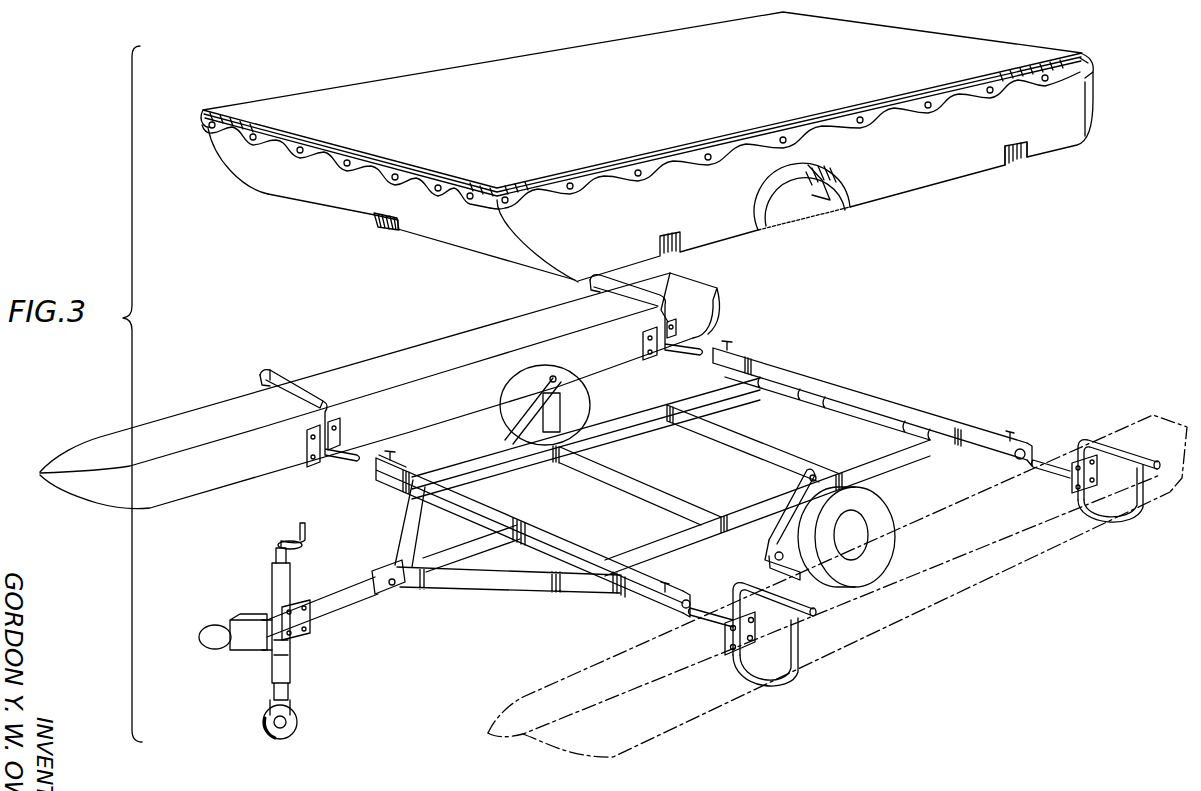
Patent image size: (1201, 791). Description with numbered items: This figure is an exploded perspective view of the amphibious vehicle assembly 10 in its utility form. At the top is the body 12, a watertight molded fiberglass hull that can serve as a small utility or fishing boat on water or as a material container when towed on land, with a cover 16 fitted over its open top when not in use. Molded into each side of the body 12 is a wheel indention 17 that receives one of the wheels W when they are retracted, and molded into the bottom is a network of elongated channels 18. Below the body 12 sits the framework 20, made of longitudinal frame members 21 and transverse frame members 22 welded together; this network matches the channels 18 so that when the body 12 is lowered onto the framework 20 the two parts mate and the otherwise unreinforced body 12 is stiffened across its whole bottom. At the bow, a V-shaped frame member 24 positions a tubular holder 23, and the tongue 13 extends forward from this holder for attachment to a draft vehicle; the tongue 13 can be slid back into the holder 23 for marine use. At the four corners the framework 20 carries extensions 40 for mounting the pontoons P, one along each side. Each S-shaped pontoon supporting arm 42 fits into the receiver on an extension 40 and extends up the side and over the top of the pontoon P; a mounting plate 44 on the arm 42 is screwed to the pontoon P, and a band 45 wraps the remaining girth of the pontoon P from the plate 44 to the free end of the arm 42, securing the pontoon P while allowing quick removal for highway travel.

The amphibious vehicle assembly 10 is at (1150, 224).
The body 12 is at (912, 178).
The tongue 13 is at (340, 602).
The cover 16 is at (1003, 52).
The wheel indentions 17 is at (823, 190).
The elongated channels 18 is at (1017, 157).
The framework 20 is at (917, 380).
The longitudinal frame members 21 is at (653, 557).
The transverse frame members 22 is at (655, 482).
The tubular holder 23 is at (433, 555).
The V-shaped frame member 24 is at (507, 582).
The extensions 40 is at (1000, 433).
The pontoon supporting arm 42 is at (1105, 440).
The mounting plate 44 is at (722, 642).
The band 45 is at (767, 677).
The wheels W is at (877, 507).
The pontoons P is at (673, 737).